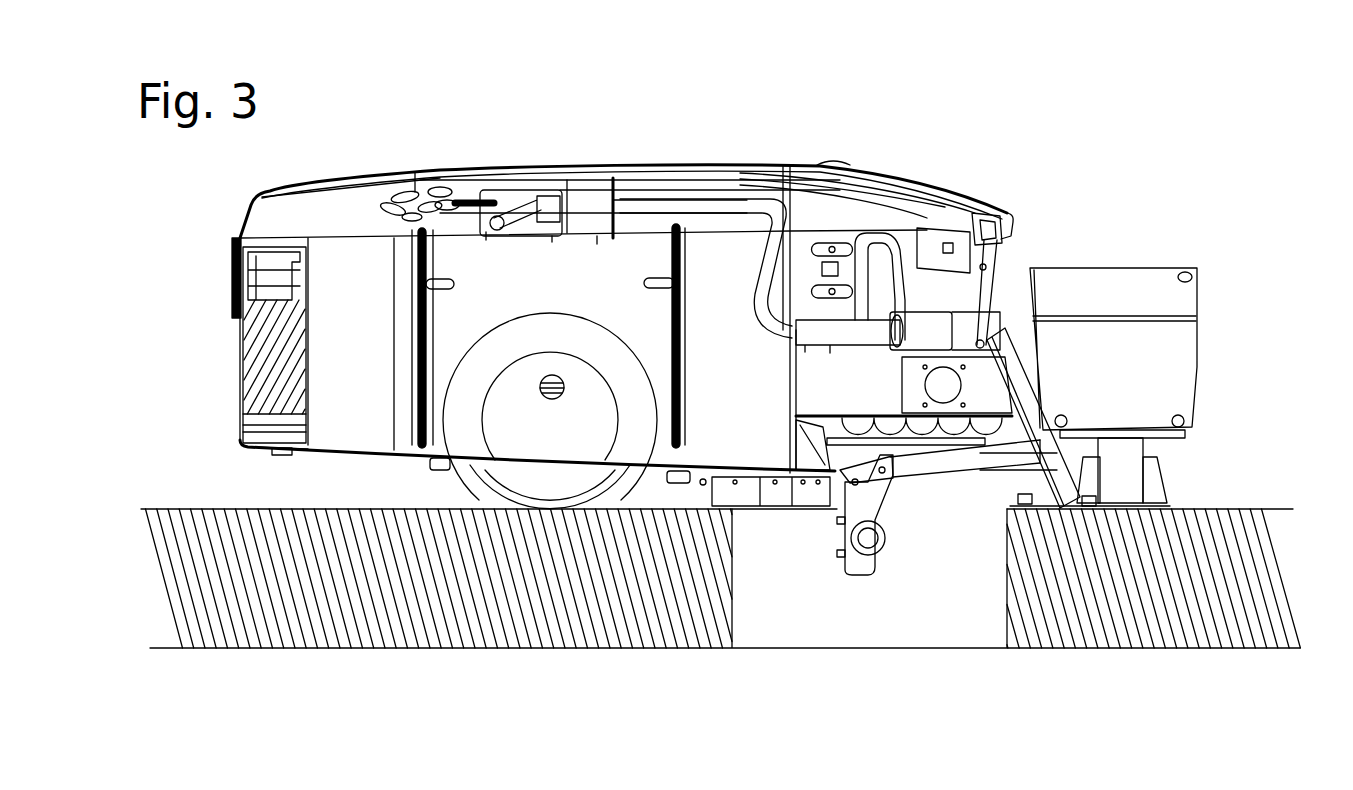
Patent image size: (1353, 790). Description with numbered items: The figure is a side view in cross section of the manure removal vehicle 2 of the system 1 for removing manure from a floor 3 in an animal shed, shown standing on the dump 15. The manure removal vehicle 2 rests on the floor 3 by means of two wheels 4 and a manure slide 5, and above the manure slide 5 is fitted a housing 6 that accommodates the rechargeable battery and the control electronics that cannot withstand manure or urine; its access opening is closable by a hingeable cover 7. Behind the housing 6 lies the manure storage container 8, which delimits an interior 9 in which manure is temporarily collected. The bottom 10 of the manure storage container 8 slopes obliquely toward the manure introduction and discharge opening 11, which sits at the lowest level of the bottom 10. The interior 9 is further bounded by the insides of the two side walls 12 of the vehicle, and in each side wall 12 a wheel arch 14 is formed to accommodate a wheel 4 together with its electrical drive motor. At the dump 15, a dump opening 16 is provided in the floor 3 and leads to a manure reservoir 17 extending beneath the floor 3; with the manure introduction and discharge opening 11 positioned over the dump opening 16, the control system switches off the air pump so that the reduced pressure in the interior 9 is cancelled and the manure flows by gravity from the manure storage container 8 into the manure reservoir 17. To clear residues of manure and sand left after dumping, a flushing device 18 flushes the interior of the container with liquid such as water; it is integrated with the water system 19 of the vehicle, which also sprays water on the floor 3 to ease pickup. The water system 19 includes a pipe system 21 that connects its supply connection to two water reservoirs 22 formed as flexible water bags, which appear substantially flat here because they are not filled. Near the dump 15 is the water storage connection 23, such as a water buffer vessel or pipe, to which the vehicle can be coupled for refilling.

The system 1 is at (1047, 95).
The manure removal vehicle 2 is at (870, 155).
The floor 3 is at (177, 509).
The wheel 4 is at (497, 480).
The manure slide 5 is at (723, 495).
The housing 6 is at (928, 245).
The hingeable cover 7 is at (928, 250).
The manure storage container 8 is at (362, 280).
The interior 9 is at (347, 413).
The bottom 10 is at (363, 453).
The manure introduction and discharge opening 11 is at (750, 482).
The side wall 12 is at (712, 433).
The wheel arch 14 is at (467, 432).
The dump 15 is at (1010, 285).
The dump opening 16 is at (838, 597).
The manure reservoir 17 is at (899, 714).
The flushing device 18 is at (488, 190).
The water system 19 is at (753, 205).
The pipe system 21 is at (690, 210).
The water reservoir 22 is at (410, 363).
The water storage connection 23 is at (1020, 327).